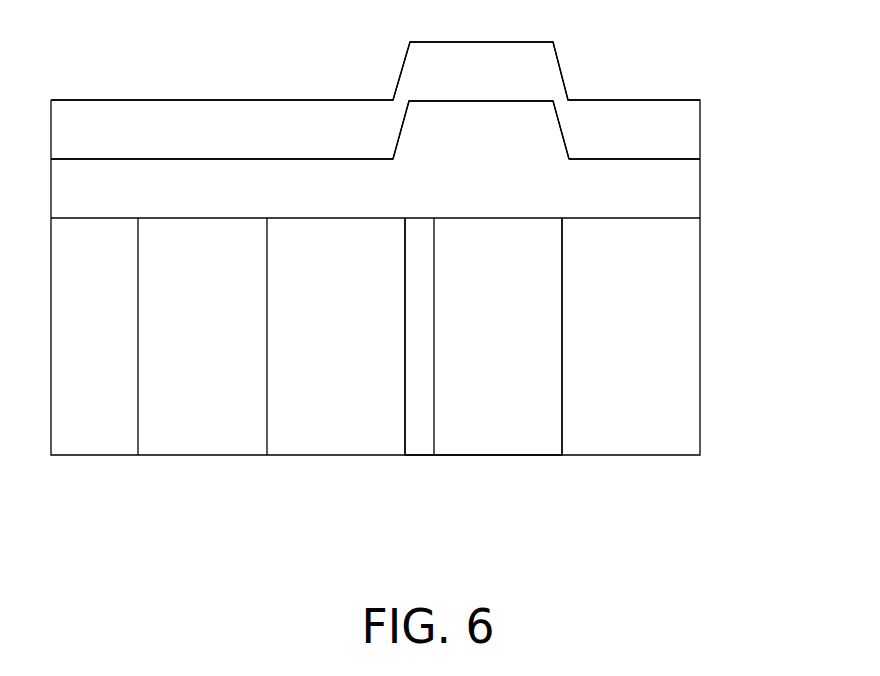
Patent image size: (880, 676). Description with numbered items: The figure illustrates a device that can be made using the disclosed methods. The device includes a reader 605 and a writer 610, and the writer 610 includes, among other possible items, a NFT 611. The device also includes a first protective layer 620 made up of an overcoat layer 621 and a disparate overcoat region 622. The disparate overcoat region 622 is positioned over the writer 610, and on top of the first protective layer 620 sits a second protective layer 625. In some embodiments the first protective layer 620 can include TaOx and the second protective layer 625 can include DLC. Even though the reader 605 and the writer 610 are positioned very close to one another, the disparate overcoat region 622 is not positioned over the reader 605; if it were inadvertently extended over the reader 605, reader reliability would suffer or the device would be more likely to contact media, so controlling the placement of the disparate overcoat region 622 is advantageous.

The first protective layer 620 is at (712, 189).
The overcoat layer 621 is at (213, 202).
The second protective layer 625 is at (308, 144).
The disparate overcoat region 622 is at (472, 142).
The reader 605 is at (178, 346).
The NFT 611 is at (420, 410).
The writer 610 is at (563, 455).